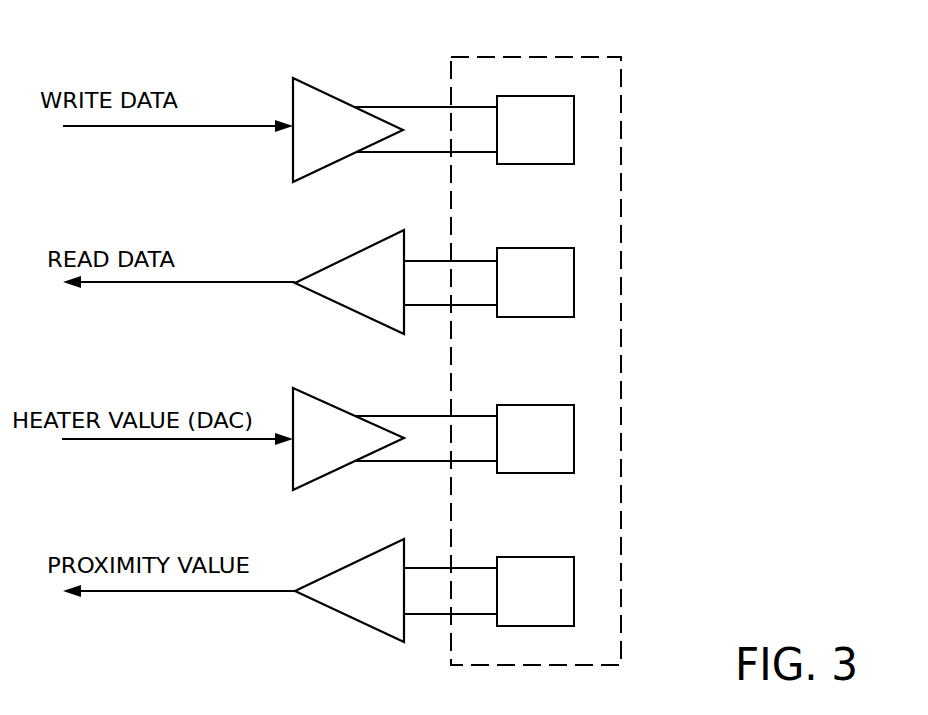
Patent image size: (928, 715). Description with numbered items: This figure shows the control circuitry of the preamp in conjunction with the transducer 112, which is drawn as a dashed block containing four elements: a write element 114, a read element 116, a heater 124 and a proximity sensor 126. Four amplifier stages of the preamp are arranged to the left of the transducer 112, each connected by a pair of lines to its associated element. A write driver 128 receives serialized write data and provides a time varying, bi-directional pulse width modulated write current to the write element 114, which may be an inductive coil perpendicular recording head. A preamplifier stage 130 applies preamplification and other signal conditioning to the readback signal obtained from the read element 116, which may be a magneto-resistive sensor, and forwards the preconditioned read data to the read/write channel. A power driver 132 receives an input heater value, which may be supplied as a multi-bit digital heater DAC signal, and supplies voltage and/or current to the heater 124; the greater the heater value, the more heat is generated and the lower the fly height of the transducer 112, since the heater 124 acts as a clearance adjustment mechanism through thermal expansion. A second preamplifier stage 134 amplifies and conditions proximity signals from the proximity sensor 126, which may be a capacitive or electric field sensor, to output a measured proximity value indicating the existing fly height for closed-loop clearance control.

The transducer 112 is at (539, 55).
The write element 114 is at (574, 130).
The read element 116 is at (574, 283).
The heater 124 is at (574, 435).
The proximity sensor 126 is at (574, 593).
The write driver 128 is at (318, 90).
The preamplifier stage 130 is at (343, 260).
The power driver 132 is at (322, 400).
The second preamplifier stage 134 is at (360, 561).